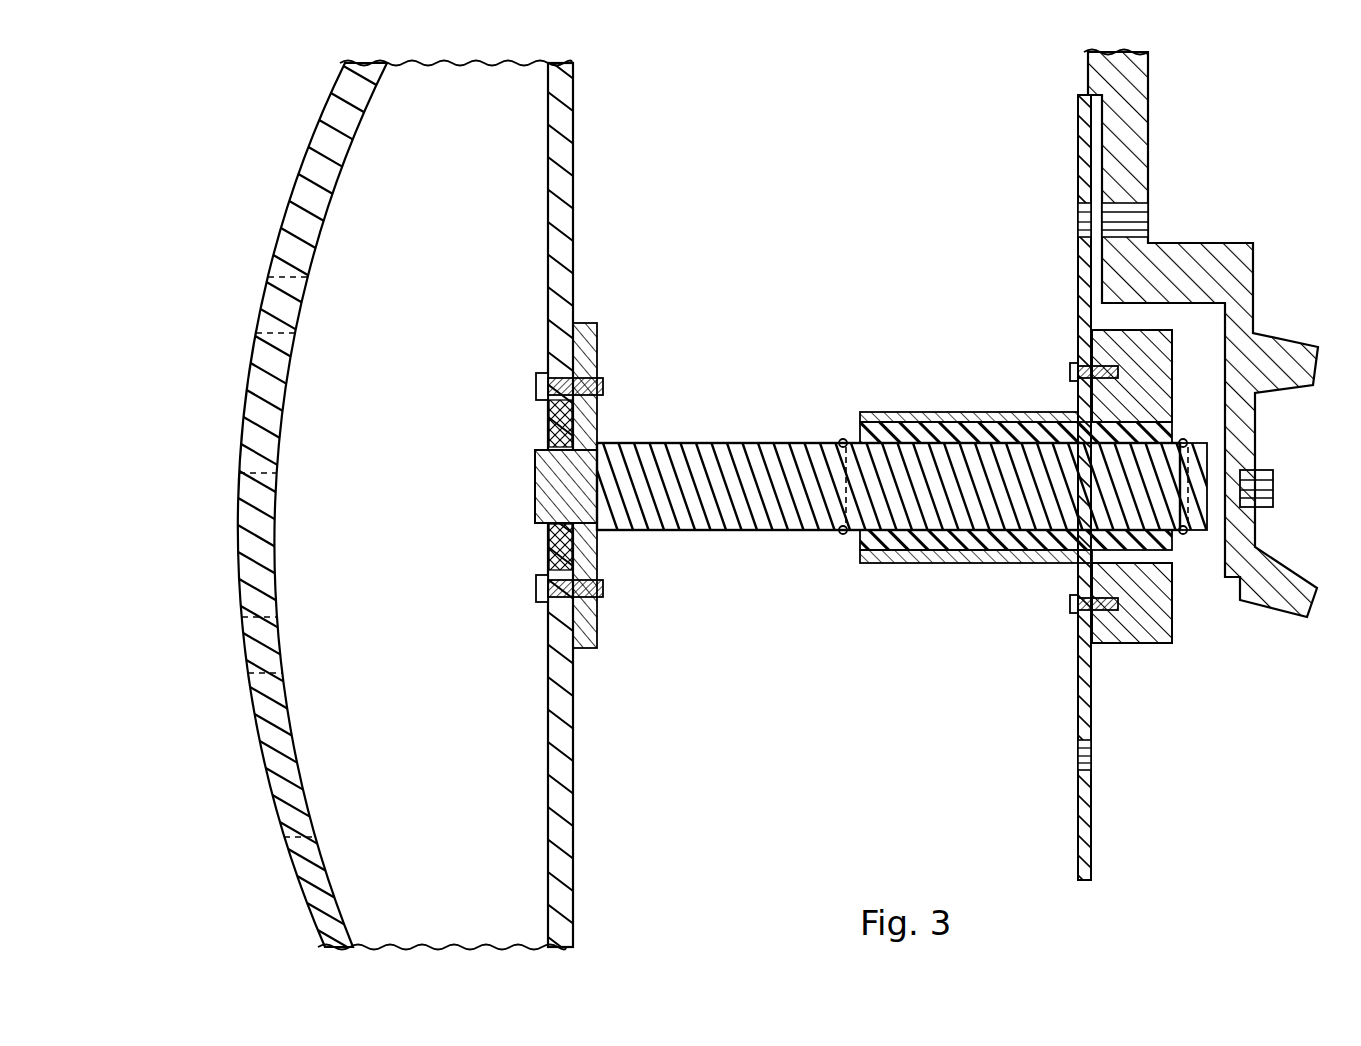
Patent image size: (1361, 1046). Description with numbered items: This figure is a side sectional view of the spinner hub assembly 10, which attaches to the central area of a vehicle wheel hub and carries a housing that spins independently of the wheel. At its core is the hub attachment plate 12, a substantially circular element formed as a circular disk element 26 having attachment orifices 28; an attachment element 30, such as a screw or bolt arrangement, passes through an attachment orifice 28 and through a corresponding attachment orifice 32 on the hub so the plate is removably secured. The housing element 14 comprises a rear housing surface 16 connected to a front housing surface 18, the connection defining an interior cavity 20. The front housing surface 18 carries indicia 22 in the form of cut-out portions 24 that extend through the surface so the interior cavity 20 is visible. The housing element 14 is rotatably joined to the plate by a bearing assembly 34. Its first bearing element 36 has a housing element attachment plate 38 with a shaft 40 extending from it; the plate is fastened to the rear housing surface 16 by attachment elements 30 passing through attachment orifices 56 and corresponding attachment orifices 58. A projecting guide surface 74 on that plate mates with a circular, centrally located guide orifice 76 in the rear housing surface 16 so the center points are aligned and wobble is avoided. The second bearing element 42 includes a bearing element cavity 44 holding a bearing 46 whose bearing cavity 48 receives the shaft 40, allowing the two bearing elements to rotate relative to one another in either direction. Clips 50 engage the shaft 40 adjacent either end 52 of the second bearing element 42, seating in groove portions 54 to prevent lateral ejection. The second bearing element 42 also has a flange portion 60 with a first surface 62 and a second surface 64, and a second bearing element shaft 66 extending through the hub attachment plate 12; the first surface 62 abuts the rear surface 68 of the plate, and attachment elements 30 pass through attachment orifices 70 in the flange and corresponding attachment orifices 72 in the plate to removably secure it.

The spinner hub assembly 10 is at (775, 205).
The hub attachment plate 12 is at (818, 603).
The housing element 14 is at (600, 820).
The rear housing surface 16 is at (573, 160).
The front housing surface 18 is at (348, 143).
The interior cavity 20 is at (447, 281).
The indicia 22 is at (220, 342).
The cut-out portions 24 is at (287, 312).
The circular disk element 26 is at (1078, 176).
The attachment orifices 28 is at (1078, 223).
The attachment element 30 is at (536, 386).
The attachment orifice 32 is at (1140, 222).
The bearing assembly 34 is at (853, 325).
The first bearing element 36 is at (677, 607).
The housing element attachment plate 38 is at (597, 412).
The shaft 40 is at (812, 441).
The second bearing element 42 is at (940, 645).
The bearing element cavity 44 is at (955, 418).
The bearing 46 is at (993, 420).
The bearing cavity 48 is at (905, 557).
The clips 50 is at (843, 438).
The end 52 is at (867, 382).
The groove portions 54 is at (1207, 446).
The attachment orifices 56 is at (597, 366).
The attachment orifice 58 is at (549, 423).
The flange portion 60 is at (1140, 645).
The first surface 62 is at (1078, 648).
The second surface 64 is at (1172, 612).
The second bearing element shaft 66 is at (975, 572).
The rear surface 68 is at (1130, 318).
The attachment orifices 70 is at (1100, 328).
The attachment orifices 72 is at (1078, 358).
The projecting guide surface 74 is at (535, 492).
The guide orifice 76 is at (597, 435).